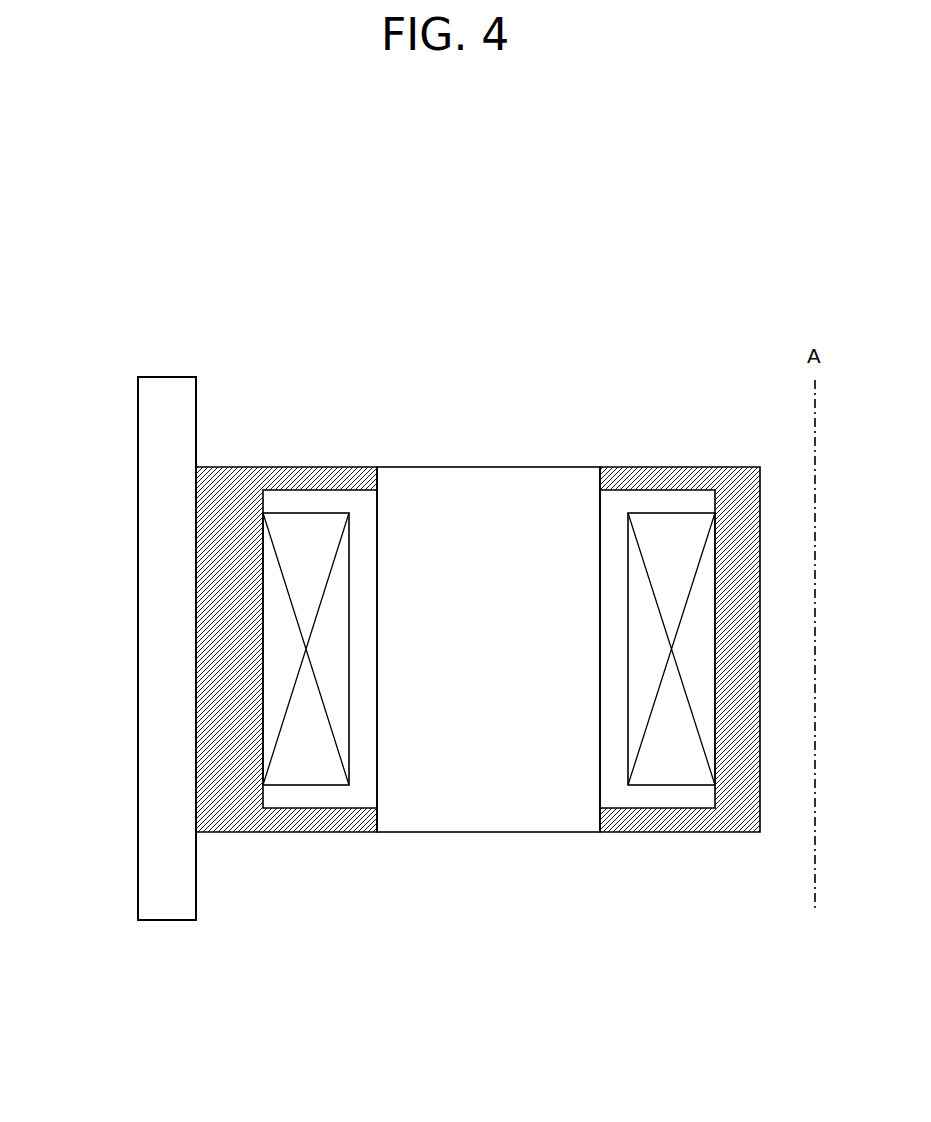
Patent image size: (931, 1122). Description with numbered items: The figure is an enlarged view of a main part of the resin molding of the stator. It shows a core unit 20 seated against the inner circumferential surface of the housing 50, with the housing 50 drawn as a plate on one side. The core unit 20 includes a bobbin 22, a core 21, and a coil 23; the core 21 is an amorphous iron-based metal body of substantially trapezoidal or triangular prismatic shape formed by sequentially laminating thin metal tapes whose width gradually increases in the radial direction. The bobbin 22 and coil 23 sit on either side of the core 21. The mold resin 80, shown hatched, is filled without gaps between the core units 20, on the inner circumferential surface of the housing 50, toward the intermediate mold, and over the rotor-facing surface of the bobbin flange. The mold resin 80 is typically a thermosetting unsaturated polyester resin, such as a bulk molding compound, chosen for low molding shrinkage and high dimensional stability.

The housing 50 is at (138, 438).
The mold resin 80 is at (240, 482).
The core unit 20 is at (735, 370).
The core 21 is at (467, 483).
The bobbin 22 is at (642, 500).
The coil 23 is at (305, 527).